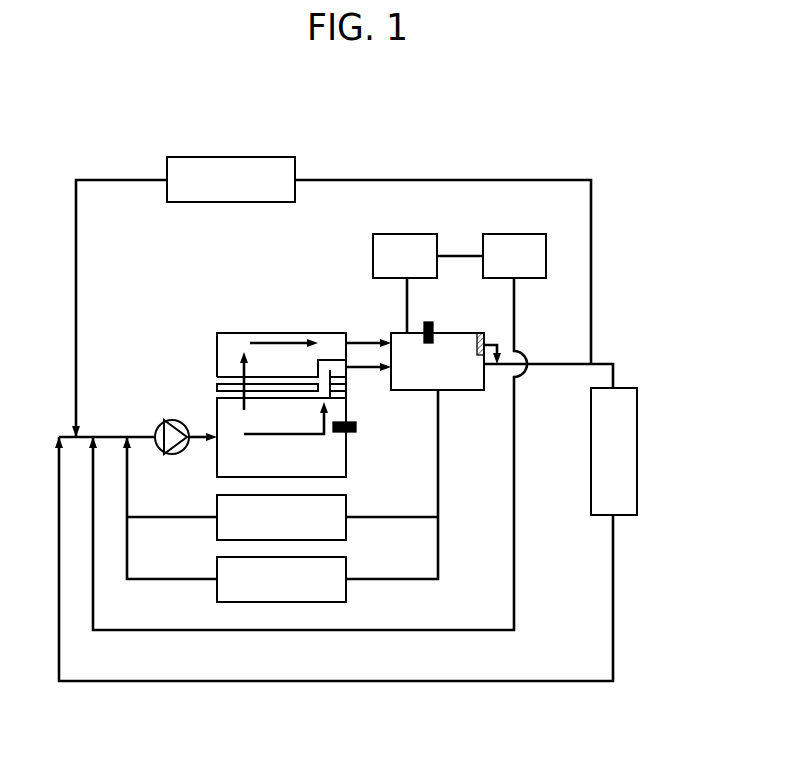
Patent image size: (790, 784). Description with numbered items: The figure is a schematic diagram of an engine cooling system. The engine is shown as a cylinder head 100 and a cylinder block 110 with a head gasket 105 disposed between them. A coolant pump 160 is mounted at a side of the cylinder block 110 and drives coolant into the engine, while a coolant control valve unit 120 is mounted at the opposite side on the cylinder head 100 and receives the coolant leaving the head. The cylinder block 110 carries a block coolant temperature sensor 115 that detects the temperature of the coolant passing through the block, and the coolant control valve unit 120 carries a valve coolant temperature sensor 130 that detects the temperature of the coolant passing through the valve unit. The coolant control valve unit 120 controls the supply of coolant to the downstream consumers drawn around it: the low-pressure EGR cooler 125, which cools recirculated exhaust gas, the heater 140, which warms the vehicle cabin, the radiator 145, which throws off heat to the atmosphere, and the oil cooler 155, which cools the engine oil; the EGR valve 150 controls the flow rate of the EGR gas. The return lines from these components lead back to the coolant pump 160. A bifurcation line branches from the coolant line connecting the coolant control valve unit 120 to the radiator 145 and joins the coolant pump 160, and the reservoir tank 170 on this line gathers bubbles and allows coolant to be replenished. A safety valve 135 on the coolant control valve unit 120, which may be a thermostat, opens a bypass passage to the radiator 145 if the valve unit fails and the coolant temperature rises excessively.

The cylinder head 100 is at (250, 333).
The head gasket 105 is at (217, 386).
The cylinder block 110 is at (346, 467).
The block coolant temperature sensor 115 is at (357, 427).
The coolant control valve unit 120 is at (467, 390).
The low-pressure EGR cooler 125 is at (373, 256).
The valve coolant temperature sensor 130 is at (424, 325).
The safety valve 135 is at (480, 333).
The heater 140 is at (538, 279).
The radiator 145 is at (637, 452).
The EGR valve 150 is at (346, 533).
The oil cooler 155 is at (280, 603).
The coolant pump 160 is at (166, 421).
The reservoir tank 170 is at (233, 157).